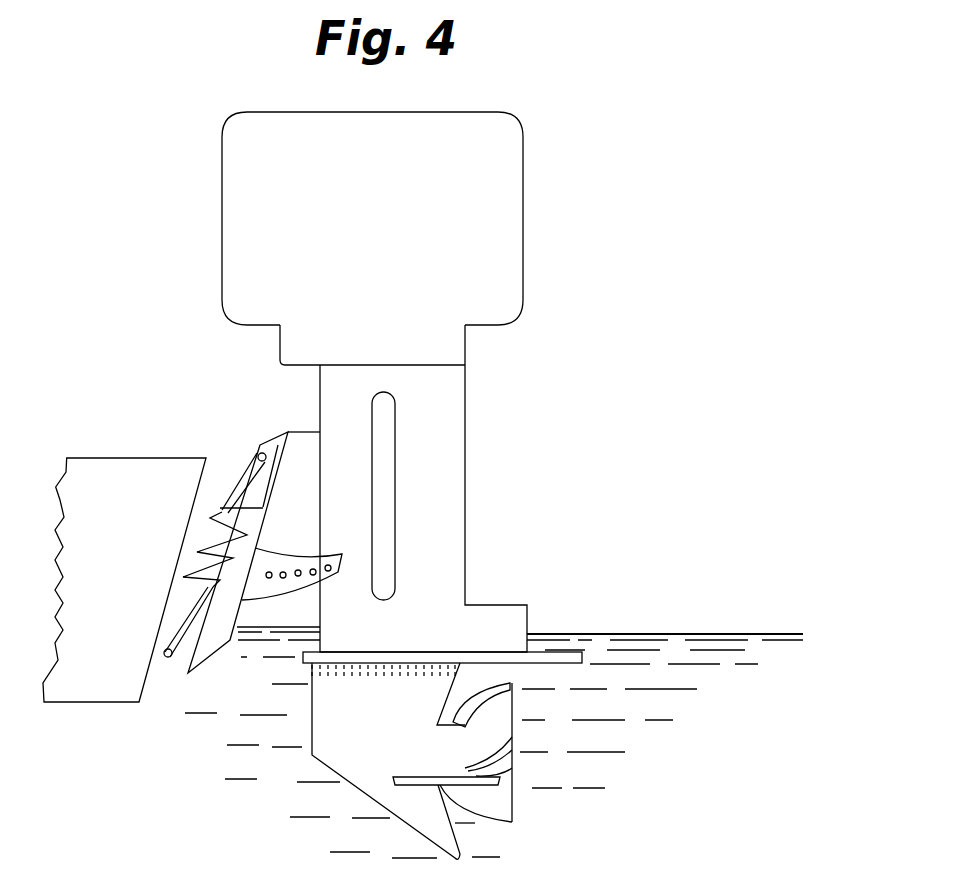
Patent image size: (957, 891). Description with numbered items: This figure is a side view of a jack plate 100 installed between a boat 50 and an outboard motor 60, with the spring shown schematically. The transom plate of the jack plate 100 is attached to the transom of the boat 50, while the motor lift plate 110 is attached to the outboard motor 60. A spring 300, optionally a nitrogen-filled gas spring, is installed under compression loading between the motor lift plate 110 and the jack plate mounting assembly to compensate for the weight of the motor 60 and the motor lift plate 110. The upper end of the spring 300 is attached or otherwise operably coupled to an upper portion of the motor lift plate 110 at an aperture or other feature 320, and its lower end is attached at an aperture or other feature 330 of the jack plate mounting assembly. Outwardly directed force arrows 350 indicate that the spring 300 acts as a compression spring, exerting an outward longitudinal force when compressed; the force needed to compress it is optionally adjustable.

The outboard motor 60 is at (522, 254).
The boat 50 is at (178, 457).
The jack plate 100 is at (177, 573).
The motor lift plate 110 is at (270, 444).
The aperture or other feature 320 is at (257, 453).
The outwardly directed force arrows 350 is at (195, 552).
The spring 300 is at (183, 617).
The aperture or other feature 330 is at (120, 652).